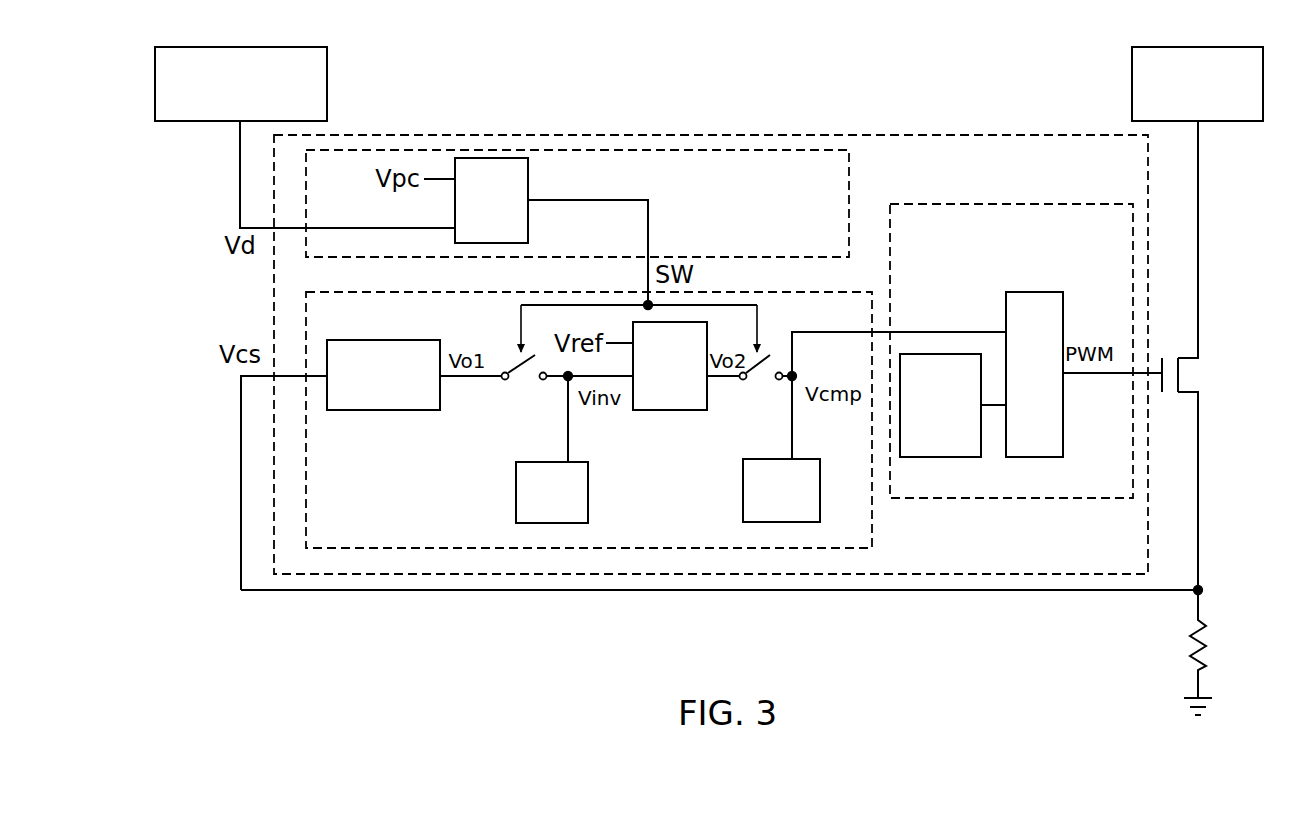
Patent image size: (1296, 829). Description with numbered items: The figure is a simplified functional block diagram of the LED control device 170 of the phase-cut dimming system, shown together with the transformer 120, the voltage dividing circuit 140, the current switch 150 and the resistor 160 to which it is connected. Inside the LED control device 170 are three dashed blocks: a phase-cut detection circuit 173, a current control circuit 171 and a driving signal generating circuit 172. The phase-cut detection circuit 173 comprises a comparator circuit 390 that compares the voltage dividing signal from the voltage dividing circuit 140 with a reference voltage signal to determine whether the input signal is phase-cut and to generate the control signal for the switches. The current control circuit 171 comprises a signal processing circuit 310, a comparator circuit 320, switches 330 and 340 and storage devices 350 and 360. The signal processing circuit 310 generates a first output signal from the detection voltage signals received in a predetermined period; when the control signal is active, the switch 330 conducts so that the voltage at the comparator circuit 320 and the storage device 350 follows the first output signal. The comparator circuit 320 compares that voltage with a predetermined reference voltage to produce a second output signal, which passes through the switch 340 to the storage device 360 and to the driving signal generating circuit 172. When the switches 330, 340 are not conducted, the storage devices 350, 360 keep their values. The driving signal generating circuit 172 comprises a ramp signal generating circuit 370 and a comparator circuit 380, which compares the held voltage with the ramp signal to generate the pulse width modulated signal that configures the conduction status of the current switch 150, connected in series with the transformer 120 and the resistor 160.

The transformer 120 is at (1197, 84).
The voltage dividing circuit 140 is at (241, 84).
The current switch 150 is at (1196, 373).
The resistor 160 is at (1184, 643).
The LED control device 170 is at (1017, 135).
The current control circuit 171 is at (872, 548).
The driving signal generating circuit 172 is at (1060, 498).
The phase-cut detection circuit 173 is at (851, 186).
The signal processing circuit 310 is at (387, 411).
The comparator circuit 320 is at (670, 411).
The switch 330 is at (520, 382).
The switch 340 is at (757, 382).
The storage device 350 is at (516, 494).
The storage device 360 is at (743, 516).
The ramp signal generating circuit 370 is at (910, 458).
The comparator circuit 380 is at (1023, 458).
The comparator circuit 390 is at (530, 238).